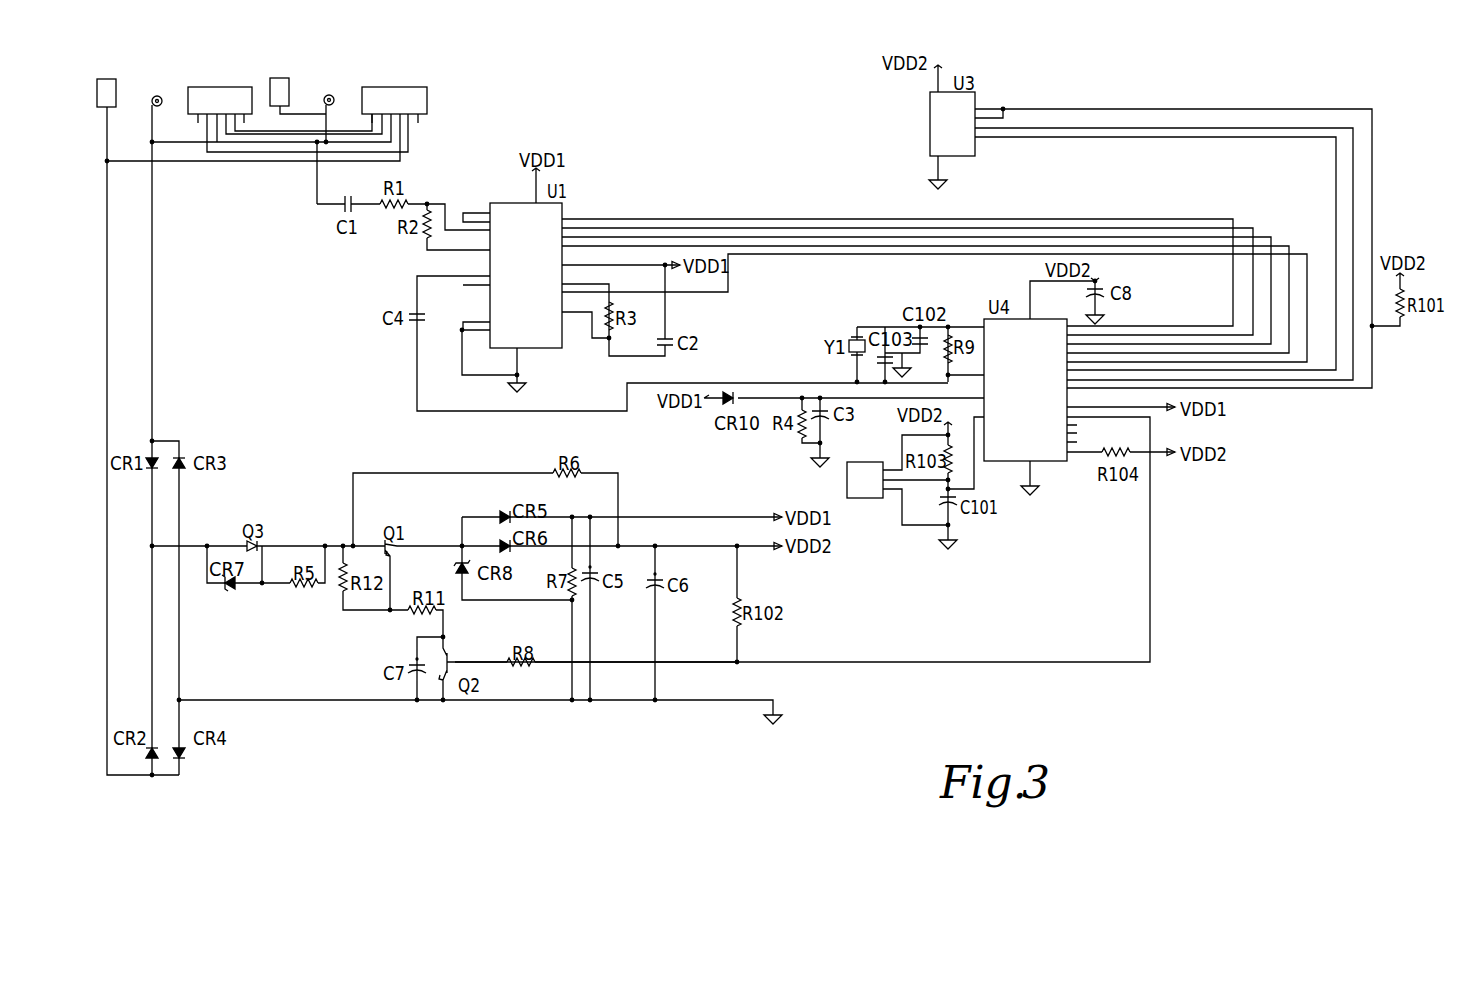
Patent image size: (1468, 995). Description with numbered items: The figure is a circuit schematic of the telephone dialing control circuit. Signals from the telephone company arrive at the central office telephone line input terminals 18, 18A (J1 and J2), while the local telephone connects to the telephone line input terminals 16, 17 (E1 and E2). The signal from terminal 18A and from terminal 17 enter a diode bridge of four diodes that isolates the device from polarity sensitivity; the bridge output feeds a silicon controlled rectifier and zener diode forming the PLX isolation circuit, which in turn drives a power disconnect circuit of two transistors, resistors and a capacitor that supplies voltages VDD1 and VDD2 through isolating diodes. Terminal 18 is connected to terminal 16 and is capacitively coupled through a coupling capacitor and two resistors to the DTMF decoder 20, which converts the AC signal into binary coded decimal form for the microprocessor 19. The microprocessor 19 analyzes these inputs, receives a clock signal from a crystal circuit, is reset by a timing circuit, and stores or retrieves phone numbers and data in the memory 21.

The telephone line input terminal 16 is at (162, 97).
The telephone line input terminal 17 is at (334, 97).
The central office telephone line input terminal 18 is at (117, 82).
The central office telephone line input terminal 18A is at (281, 77).
The microprocessor 19 is at (1048, 463).
The dual tone multiple frequency (DTMF) signal decoder 20 is at (510, 203).
The memory 21 is at (930, 126).